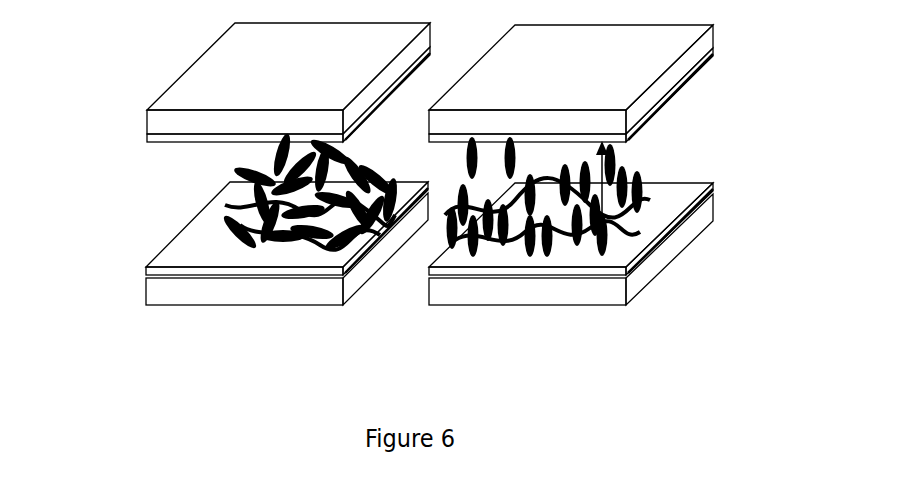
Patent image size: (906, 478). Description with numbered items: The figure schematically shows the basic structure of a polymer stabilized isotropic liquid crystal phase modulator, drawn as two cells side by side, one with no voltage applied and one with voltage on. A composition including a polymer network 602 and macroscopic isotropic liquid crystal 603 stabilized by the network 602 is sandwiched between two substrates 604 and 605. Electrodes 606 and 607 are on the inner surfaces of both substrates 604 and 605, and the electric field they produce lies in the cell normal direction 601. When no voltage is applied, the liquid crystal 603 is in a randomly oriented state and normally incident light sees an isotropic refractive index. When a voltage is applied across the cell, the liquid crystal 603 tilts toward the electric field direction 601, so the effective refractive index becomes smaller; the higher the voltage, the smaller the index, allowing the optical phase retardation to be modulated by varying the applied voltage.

The cell normal direction 601 is at (605, 161).
The polymer network 602 is at (222, 216).
The macroscopic isotropic liquid crystal 603 is at (236, 194).
The substrate 604 is at (681, 72).
The substrate 605 is at (598, 306).
The electrode 606 is at (149, 140).
The electrode 607 is at (192, 228).